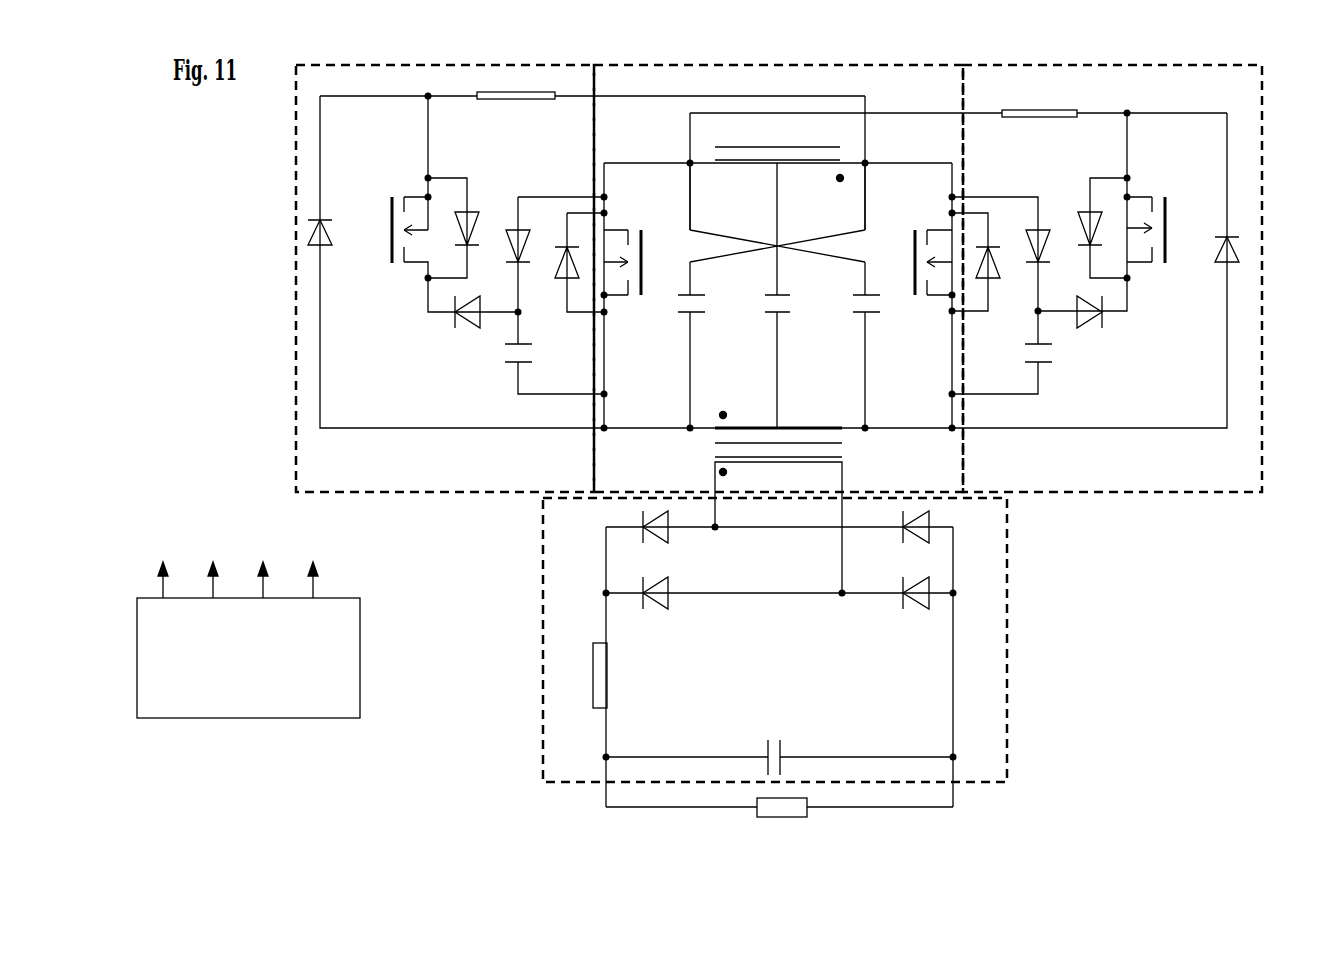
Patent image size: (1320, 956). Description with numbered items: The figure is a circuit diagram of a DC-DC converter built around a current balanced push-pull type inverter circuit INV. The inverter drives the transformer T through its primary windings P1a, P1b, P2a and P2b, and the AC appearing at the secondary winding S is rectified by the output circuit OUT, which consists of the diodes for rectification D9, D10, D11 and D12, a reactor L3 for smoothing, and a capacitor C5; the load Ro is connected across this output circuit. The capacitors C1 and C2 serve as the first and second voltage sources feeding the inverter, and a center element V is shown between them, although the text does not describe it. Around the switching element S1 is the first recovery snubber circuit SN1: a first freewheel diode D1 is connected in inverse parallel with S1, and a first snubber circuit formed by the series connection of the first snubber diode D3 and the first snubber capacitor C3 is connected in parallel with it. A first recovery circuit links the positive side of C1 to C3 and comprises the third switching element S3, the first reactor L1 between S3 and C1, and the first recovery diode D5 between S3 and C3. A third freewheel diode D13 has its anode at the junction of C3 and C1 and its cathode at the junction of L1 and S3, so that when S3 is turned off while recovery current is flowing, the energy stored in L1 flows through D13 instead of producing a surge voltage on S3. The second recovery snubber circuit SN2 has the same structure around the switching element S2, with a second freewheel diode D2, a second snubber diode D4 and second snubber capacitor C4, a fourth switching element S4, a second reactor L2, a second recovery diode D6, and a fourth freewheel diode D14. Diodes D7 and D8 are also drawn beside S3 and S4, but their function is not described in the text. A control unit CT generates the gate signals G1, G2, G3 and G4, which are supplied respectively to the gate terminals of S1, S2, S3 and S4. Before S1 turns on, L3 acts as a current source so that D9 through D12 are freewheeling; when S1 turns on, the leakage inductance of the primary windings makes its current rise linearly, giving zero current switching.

The first recovery snubber circuit SN1 is at (447, 65).
The second recovery snubber circuit SN2 is at (1072, 65).
The current balanced push-pull type inverter circuit INV is at (810, 65).
The output circuit OUT is at (1010, 623).
The control unit CT is at (237, 718).
The gate signal G1 is at (167, 568).
The gate signal G2 is at (216, 568).
The gate signal G3 is at (266, 568).
The gate signal G4 is at (315, 568).
The first reactor L1 is at (516, 84).
The second reactor L2 is at (1039, 93).
The reactor for smoothing L3 is at (578, 675).
The capacitor C1 is at (707, 361).
The capacitor C2 is at (851, 361).
The first snubber capacitor C3 is at (554, 364).
The second snubber capacitor C4 is at (1002, 364).
The capacitor C5 is at (791, 752).
The first freewheel diode D1 is at (579, 241).
The second freewheel diode D2 is at (976, 240).
The first snubber diode D3 is at (553, 257).
The second snubber diode D4 is at (1004, 257).
The first recovery diode D5 is at (473, 317).
The second recovery diode D6 is at (1082, 317).
The diode D7 is at (453, 207).
The diode D8 is at (1102, 207).
The diode for rectification D9 is at (671, 533).
The diode for rectification D10 is at (893, 533).
The diode for rectification D11 is at (677, 599).
The diode for rectification D12 is at (893, 599).
The third freewheel diode D13 is at (337, 245).
The fourth freewheel diode D14 is at (1213, 261).
The switching element S1 is at (638, 262).
The switching element S2 is at (917, 262).
The third switching element S3 is at (389, 237).
The fourth switching element S4 is at (1167, 230).
The transformer T is at (764, 302).
The primary winding P1a is at (825, 196).
The primary winding P1b is at (724, 196).
The primary winding P2a is at (809, 415).
The primary winding P2b is at (746, 415).
The secondary winding S is at (778, 527).
The voltage source / DC link V is at (782, 361).
The load Ro is at (782, 825).